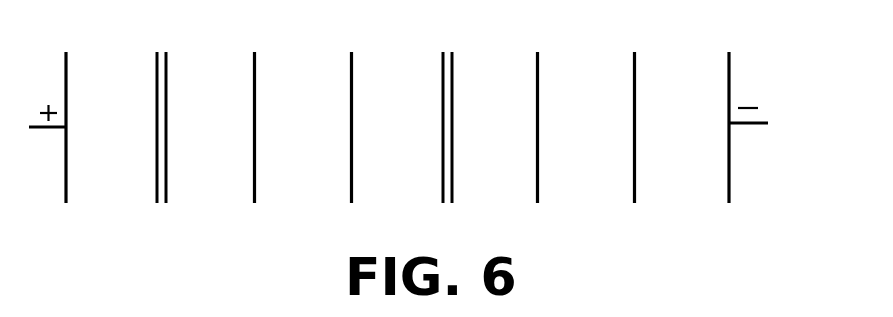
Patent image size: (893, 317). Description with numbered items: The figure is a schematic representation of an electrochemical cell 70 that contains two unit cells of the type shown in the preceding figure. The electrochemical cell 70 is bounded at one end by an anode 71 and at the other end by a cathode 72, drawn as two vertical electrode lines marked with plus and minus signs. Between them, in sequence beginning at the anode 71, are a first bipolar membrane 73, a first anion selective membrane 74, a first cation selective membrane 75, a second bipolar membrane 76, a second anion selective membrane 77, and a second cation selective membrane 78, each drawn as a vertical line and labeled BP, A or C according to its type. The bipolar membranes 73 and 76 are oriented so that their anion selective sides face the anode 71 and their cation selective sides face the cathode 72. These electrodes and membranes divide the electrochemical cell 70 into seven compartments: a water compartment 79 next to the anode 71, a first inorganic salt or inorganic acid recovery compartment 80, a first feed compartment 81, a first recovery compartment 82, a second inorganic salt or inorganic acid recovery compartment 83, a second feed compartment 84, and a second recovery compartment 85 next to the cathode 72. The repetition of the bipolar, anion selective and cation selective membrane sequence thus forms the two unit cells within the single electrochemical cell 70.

The electrochemical cell 70 is at (776, 71).
The anode 71 is at (54, 114).
The cathode 72 is at (740, 114).
The first bipolar membrane 73 is at (161, 132).
The first anion selective membrane 74 is at (255, 132).
The first cation selective membrane 75 is at (354, 132).
The second bipolar membrane 76 is at (447, 132).
The second anion selective membrane 77 is at (539, 132).
The second cation selective membrane 78 is at (634, 132).
The water compartment 79 is at (112, 134).
The first inorganic salt or inorganic acid recovery compartment 80 is at (210, 134).
The first feed compartment 81 is at (303, 134).
The first recovery compartment 82 is at (398, 134).
The second inorganic salt or inorganic acid recovery compartment 83 is at (495, 134).
The second feed compartment 84 is at (586, 134).
The second recovery compartment 85 is at (682, 134).